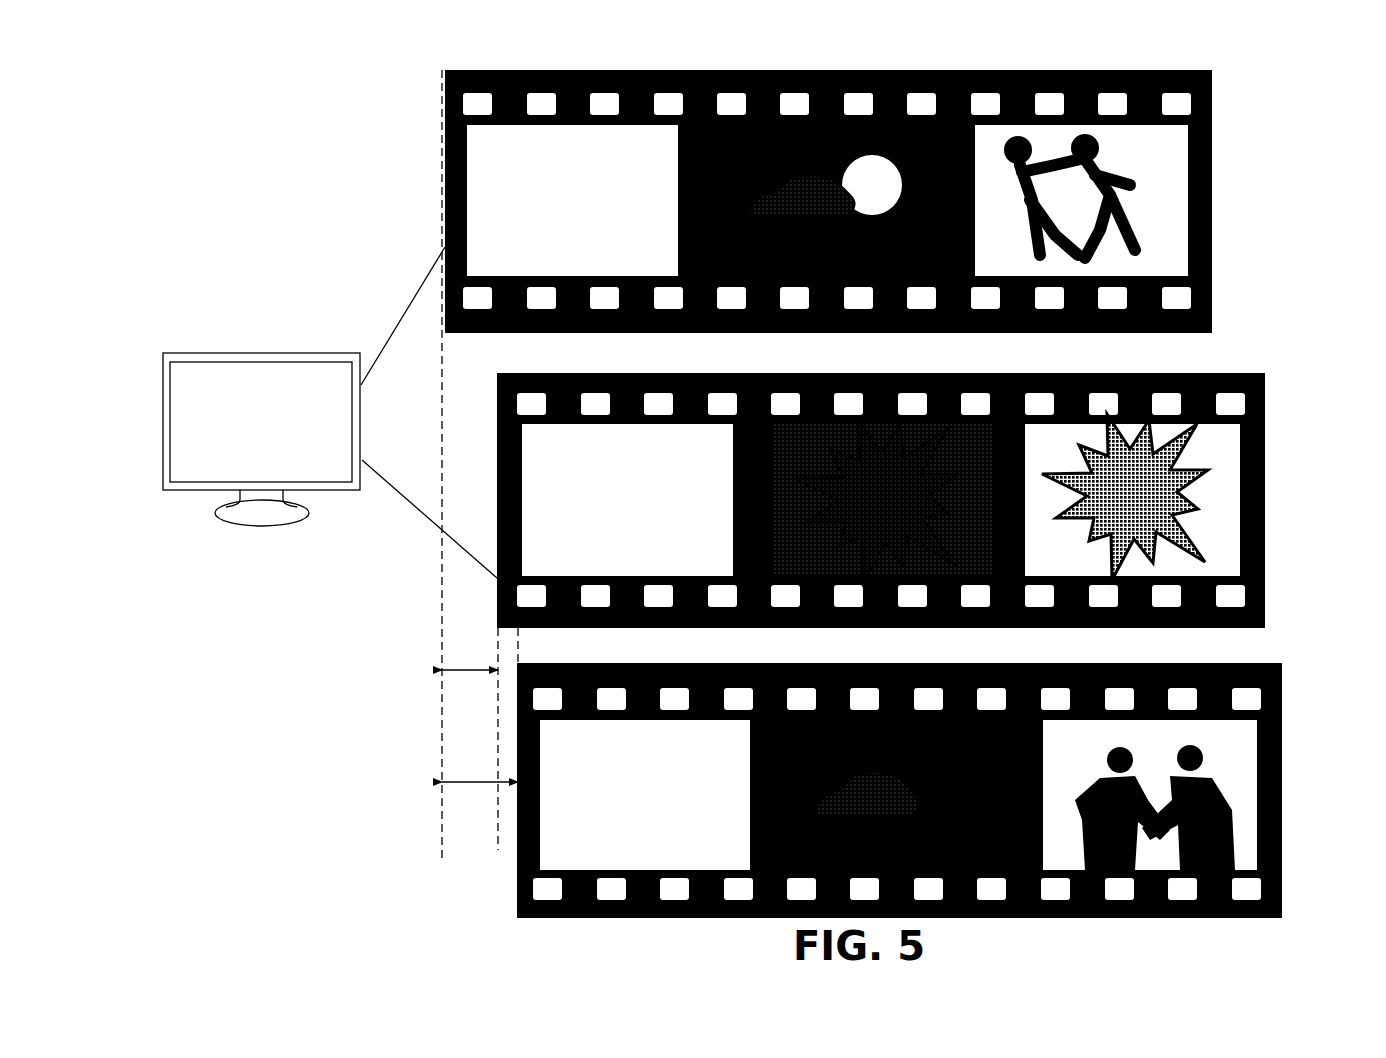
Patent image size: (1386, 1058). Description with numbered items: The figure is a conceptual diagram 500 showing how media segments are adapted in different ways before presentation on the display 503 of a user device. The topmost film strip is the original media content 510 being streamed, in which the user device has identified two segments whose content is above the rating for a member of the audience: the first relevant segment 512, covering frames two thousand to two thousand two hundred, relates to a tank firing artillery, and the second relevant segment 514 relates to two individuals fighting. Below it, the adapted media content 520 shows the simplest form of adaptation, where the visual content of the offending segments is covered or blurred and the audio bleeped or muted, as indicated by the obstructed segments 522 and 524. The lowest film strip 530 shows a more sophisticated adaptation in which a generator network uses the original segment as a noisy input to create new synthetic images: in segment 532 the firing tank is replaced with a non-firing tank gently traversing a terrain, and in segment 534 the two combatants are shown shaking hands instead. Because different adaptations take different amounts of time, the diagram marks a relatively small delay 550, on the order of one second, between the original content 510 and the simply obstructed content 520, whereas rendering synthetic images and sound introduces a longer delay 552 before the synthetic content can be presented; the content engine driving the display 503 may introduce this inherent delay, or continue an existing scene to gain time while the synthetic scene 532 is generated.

The system for synchronizing media streams 500 is at (288, 90).
The display 503 is at (265, 352).
The original media content 510 is at (874, 187).
The first relevant segment 512 is at (845, 70).
The second relevant segment 514 is at (1092, 70).
The adapted media content 520 is at (935, 483).
The adapted segment 522 is at (888, 373).
The adapted segment 524 is at (1148, 373).
The third media stream 530 is at (945, 775).
The synthetic segment 532 is at (880, 663).
The synthetic segment 534 is at (1150, 663).
The delay 550 is at (460, 668).
The delay 552 is at (467, 780).